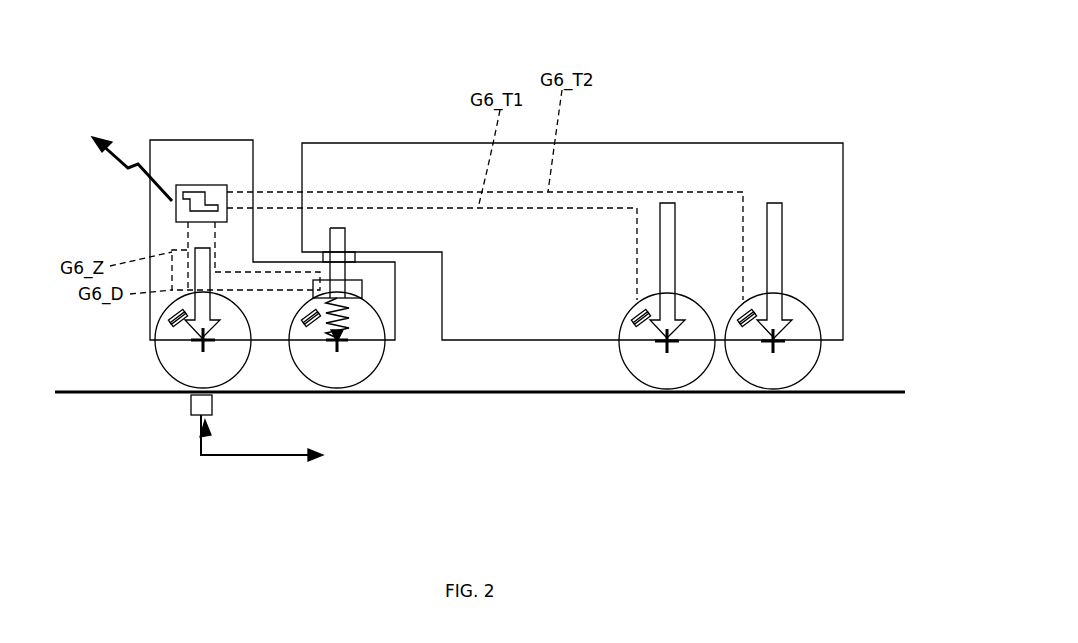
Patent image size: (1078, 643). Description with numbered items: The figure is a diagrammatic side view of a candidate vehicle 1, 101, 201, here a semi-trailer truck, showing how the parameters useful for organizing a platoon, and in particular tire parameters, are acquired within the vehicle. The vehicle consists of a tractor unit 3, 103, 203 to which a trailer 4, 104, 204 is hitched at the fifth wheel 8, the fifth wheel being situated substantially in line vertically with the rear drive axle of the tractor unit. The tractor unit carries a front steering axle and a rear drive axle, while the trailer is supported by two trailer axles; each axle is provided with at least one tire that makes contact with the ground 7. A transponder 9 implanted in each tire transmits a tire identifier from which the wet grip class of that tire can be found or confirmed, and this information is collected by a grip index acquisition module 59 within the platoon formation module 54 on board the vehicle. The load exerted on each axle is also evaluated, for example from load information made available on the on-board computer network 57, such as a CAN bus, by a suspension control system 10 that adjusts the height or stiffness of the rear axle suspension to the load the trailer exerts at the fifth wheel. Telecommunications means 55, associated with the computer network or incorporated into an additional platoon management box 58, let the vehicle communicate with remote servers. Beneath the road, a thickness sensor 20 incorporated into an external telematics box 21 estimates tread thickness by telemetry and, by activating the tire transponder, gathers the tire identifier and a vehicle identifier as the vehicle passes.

The candidate vehicle 1 is at (546, 193).
The candidate vehicle 101 is at (546, 193).
The candidate vehicle 201 is at (546, 193).
The tractor unit 3 is at (272, 193).
The tractor unit 103 is at (272, 193).
The tractor unit 203 is at (228, 142).
The trailer 4 is at (591, 198).
The trailer 104 is at (591, 198).
The trailer 204 is at (827, 167).
The ground 7 is at (868, 394).
The fifth wheel 8 is at (350, 255).
The transponder 9 is at (170, 318).
The suspension control system 10 is at (362, 290).
The thickness sensor 20 is at (197, 416).
The telematics box 21 is at (210, 440).
The platoon formation module 54 is at (178, 156).
The on-board computer network 57 is at (178, 156).
The platoon management box 58 is at (178, 184).
The telecommunications means 55 is at (172, 200).
The grip index acquisition module 59 is at (186, 207).